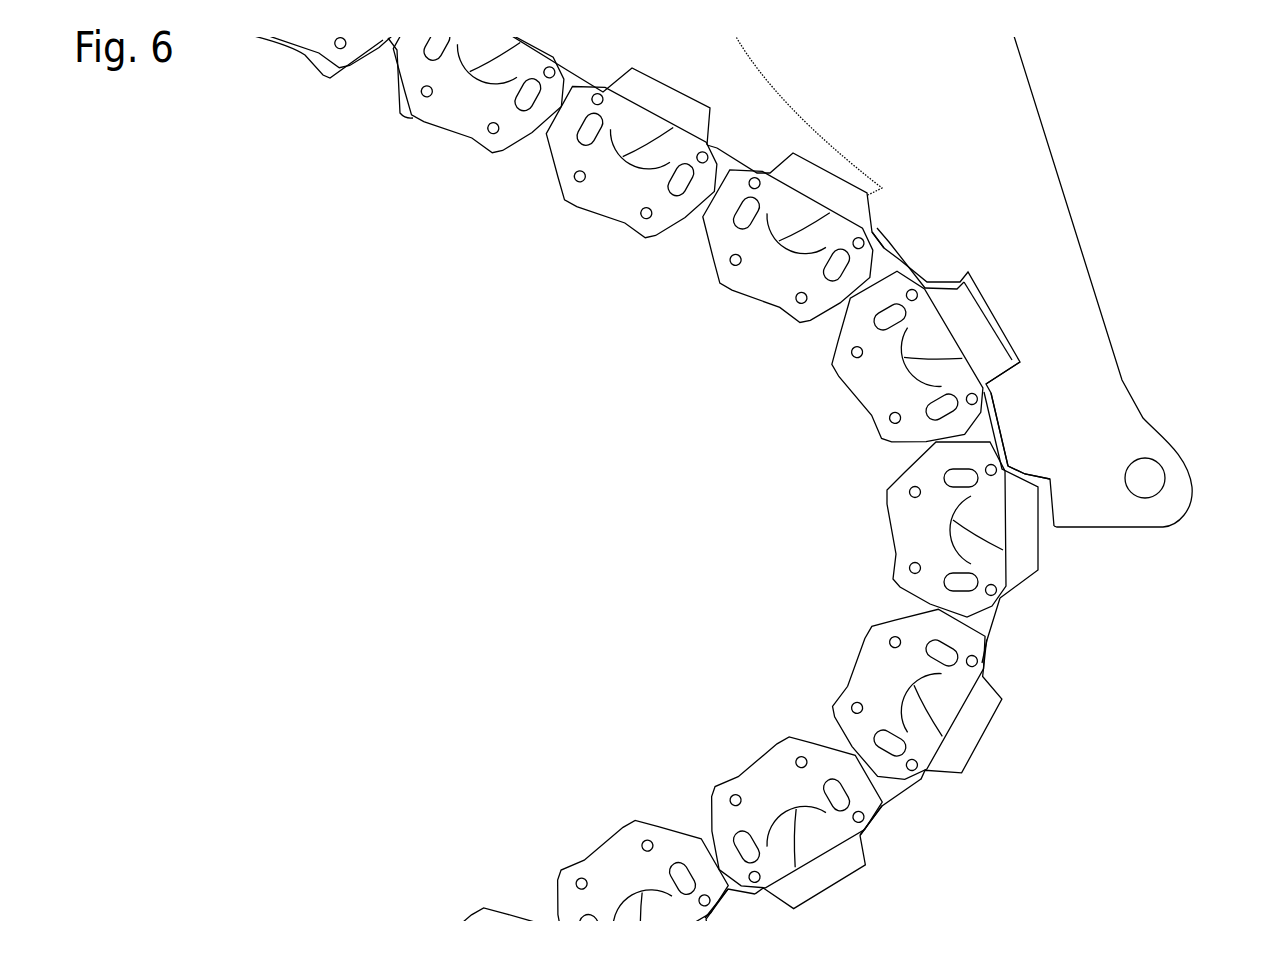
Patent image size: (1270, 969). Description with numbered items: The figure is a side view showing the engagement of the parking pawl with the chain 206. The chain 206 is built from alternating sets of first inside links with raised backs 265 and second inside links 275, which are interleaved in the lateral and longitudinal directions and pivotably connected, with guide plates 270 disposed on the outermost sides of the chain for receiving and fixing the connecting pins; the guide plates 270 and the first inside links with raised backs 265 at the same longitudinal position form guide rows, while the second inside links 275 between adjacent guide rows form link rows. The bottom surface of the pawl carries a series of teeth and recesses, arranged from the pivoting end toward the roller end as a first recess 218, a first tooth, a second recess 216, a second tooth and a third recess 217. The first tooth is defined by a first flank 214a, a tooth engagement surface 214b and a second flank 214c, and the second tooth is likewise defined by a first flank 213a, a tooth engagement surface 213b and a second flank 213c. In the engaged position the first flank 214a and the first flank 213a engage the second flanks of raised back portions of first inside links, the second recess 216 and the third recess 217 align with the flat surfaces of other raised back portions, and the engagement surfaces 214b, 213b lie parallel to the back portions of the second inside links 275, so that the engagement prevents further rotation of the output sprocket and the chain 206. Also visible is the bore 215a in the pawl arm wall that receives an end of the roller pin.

The chain 206 is at (621, 484).
The first flank of the second tooth 213a is at (1010, 382).
The tooth engagement surface of the second tooth 213b is at (993, 433).
The second flank of the second tooth 213c is at (1037, 477).
The first flank of the first tooth 214a is at (876, 200).
The tooth engagement surface of the first tooth 214b is at (884, 245).
The second flank of the first tooth 214c is at (941, 282).
The bore 215a is at (1142, 463).
The second recess 216 is at (983, 312).
The third recess 217 is at (1055, 502).
The first recess 218 is at (814, 132).
The first inside links with raised backs 265 is at (672, 108).
The guide plates 270 is at (610, 200).
The second inside links 275 is at (728, 168).